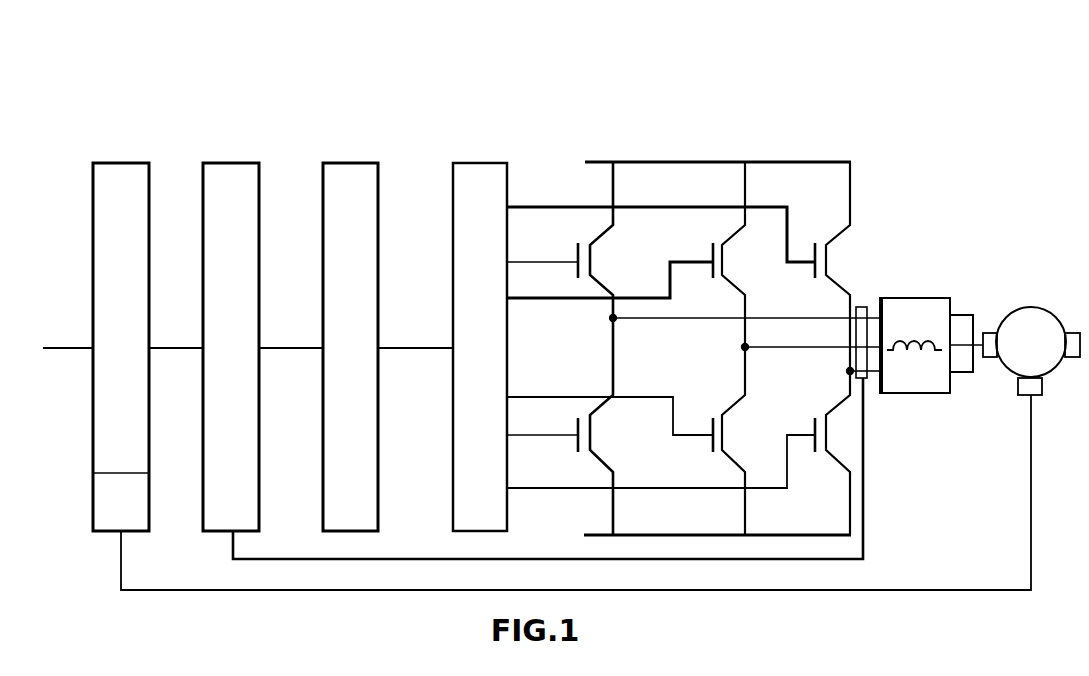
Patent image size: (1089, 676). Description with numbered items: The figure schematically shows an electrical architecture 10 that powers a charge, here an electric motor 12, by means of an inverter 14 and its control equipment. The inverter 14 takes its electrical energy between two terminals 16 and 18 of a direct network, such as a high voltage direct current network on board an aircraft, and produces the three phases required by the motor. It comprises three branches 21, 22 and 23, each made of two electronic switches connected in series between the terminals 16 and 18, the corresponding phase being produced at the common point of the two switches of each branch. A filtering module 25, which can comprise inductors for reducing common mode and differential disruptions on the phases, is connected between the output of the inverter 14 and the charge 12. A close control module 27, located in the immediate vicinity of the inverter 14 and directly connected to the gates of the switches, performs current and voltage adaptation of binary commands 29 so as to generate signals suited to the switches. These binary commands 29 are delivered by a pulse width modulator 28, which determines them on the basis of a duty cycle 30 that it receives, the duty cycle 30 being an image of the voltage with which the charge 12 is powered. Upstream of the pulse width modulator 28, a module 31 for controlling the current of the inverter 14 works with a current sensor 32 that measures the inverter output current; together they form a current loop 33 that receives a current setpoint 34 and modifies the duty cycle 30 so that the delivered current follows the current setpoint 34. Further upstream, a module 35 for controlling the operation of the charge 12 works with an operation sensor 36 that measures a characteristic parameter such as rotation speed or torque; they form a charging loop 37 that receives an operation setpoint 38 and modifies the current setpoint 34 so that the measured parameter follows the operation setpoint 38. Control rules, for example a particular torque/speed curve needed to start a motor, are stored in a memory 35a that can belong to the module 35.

The electrical architecture 10 is at (294, 82).
The electric motor 12 is at (1038, 342).
The inverter 14 is at (745, 315).
The terminal of the direct network 16 is at (596, 162).
The terminal of the direct network 18 is at (592, 533).
The branch 21 is at (625, 150).
The branch 22 is at (747, 150).
The branch 23 is at (857, 152).
The filtering module 25 is at (916, 297).
The close control module 27 is at (481, 162).
The pulse width modulator 28 is at (349, 162).
The binary commands 29 is at (415, 347).
The duty cycle 30 is at (293, 347).
The module for controlling the current 31 is at (230, 162).
The current sensor 32 is at (869, 392).
The current loop 33 is at (881, 510).
The current setpoint 34 is at (177, 347).
The module for controlling the operation of the charge 35 is at (121, 313).
The memory 35a is at (121, 492).
The operation sensor 36 is at (1018, 388).
The charging loop 37 is at (909, 598).
The operation setpoint 38 is at (63, 347).